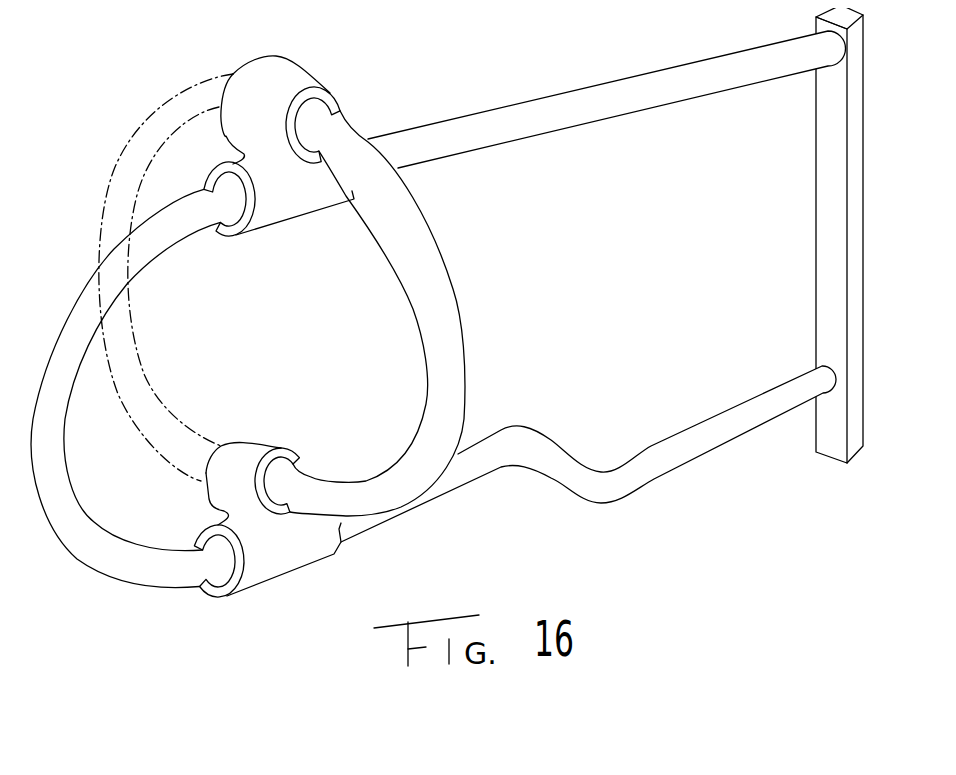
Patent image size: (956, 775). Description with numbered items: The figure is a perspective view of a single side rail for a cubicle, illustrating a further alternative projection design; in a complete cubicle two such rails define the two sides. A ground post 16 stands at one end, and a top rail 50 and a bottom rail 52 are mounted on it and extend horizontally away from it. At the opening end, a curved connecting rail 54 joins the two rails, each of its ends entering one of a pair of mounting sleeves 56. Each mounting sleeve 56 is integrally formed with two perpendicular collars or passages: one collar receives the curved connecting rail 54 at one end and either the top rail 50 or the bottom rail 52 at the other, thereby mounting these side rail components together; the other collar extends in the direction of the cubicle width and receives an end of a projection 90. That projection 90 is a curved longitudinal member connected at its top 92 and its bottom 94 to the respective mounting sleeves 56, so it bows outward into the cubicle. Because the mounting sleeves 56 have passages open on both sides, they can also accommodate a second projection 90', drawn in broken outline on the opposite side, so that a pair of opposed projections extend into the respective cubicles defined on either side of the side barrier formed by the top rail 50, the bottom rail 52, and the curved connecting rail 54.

The ground post 16 is at (818, 253).
The top rail 50 is at (533, 108).
The bottom rail 52 is at (665, 448).
The curved connecting rail 54 is at (93, 551).
The mounting sleeve 56 is at (281, 214).
The projection 90 is at (408, 313).
The second projection 90' is at (166, 277).
The top end of projection 92 is at (340, 113).
The bottom end of projection 94 is at (282, 472).